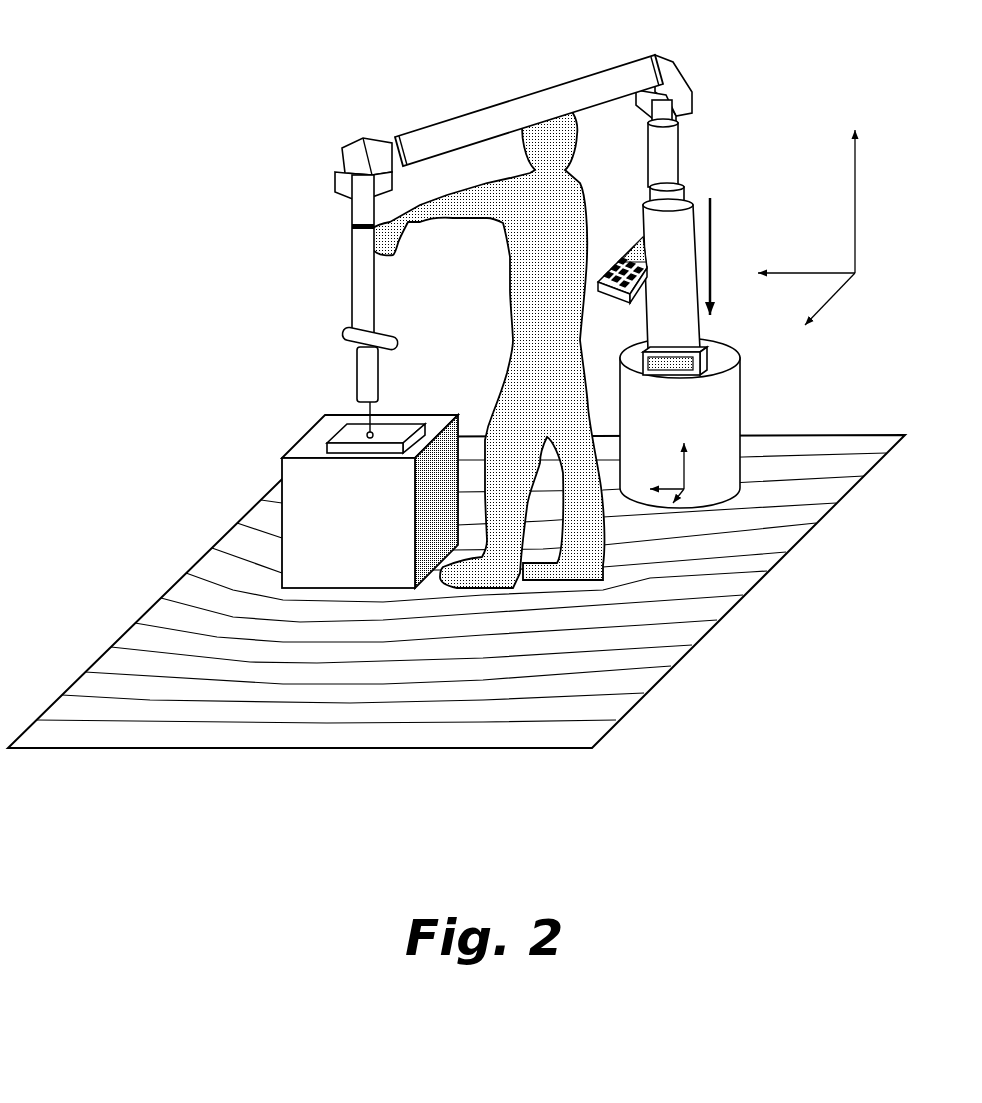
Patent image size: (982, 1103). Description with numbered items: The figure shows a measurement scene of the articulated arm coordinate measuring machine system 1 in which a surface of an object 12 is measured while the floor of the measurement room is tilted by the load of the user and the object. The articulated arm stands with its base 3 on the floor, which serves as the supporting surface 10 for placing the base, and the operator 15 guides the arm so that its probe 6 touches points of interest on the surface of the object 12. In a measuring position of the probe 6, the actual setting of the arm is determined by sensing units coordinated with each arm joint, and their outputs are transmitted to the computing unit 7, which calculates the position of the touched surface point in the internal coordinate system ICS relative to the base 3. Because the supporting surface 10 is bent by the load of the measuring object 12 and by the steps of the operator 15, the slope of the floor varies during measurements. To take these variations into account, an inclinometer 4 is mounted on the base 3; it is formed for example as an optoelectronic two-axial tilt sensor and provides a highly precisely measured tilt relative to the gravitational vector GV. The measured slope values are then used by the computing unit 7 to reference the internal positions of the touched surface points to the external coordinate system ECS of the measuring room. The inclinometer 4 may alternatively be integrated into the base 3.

The coordinate measuring system 1 is at (297, 52).
The base 3 is at (680, 467).
The inclinometer 4 is at (705, 372).
The probe 6 is at (327, 432).
The computing unit 7 is at (596, 257).
The supporting surface 10 is at (685, 520).
The object 12 is at (302, 448).
The operator 15 is at (477, 283).
The gravitational vector GV is at (670, 217).
The internal coordinate system ICS is at (647, 472).
The external coordinate system ECS is at (815, 257).